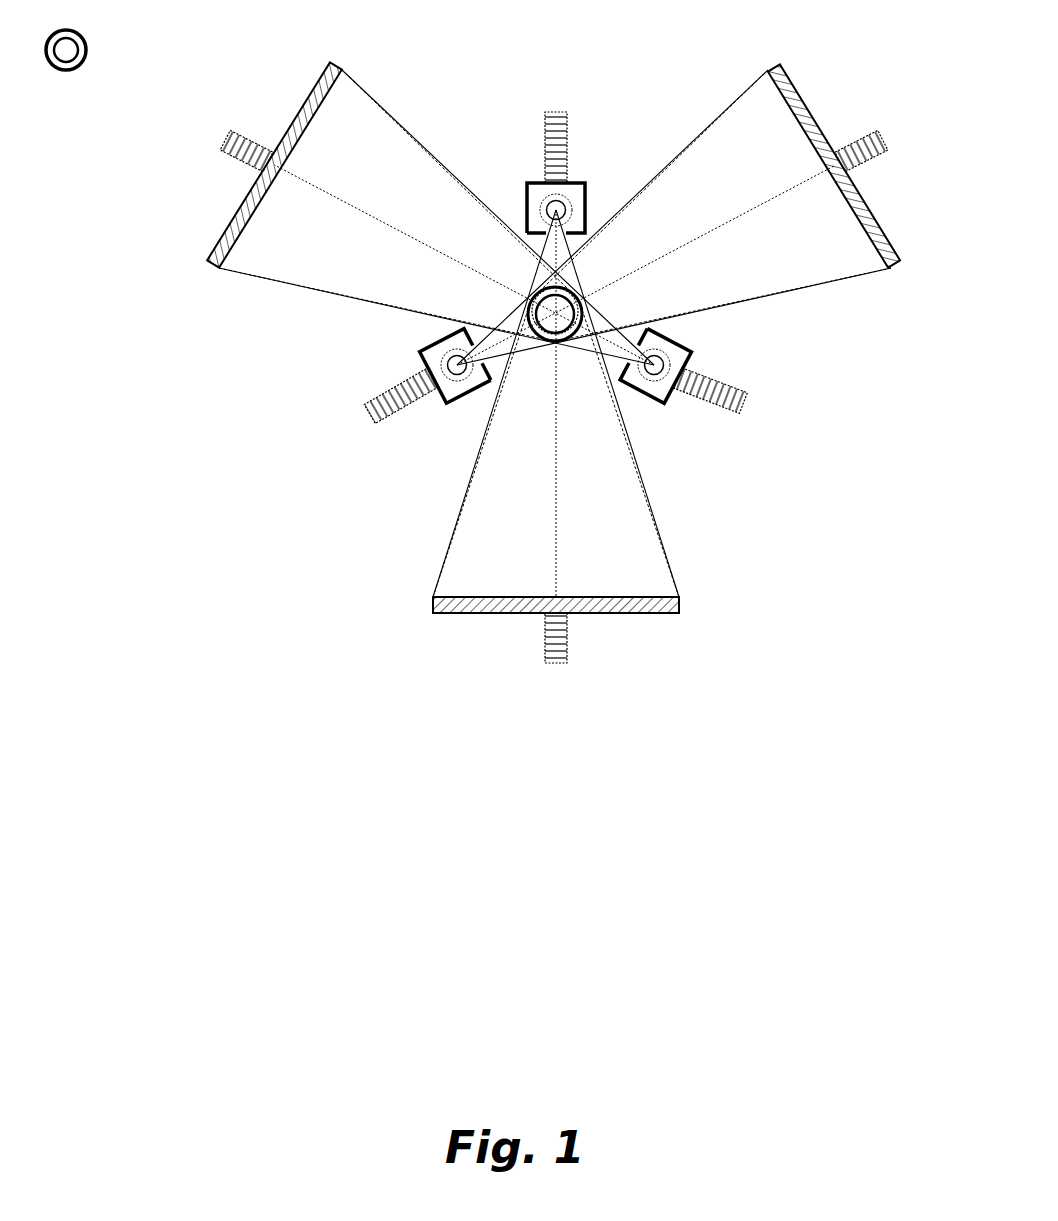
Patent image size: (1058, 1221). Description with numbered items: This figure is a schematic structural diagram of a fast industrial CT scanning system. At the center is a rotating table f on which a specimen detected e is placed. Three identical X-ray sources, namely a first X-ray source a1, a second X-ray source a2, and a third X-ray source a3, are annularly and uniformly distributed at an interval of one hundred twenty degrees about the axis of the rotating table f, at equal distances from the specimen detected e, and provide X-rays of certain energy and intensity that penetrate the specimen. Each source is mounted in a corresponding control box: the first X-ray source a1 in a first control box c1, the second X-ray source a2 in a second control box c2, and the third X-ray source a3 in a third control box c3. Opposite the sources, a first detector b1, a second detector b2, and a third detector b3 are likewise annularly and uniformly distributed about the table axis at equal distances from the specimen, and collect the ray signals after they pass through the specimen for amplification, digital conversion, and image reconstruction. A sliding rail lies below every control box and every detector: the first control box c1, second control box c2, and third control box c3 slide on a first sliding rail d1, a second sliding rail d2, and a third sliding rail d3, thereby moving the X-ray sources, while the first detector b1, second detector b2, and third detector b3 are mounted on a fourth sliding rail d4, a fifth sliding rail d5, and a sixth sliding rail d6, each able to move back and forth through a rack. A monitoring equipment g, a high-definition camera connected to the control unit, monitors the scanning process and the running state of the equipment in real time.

The first X-ray source a1 is at (570, 202).
The second X-ray source a2 is at (678, 348).
The third X-ray source a3 is at (437, 353).
The first detector b1 is at (680, 597).
The second detector b2 is at (313, 97).
The third detector b3 is at (800, 97).
The first control box c1 is at (540, 182).
The second control box c2 is at (642, 397).
The third control box c3 is at (462, 398).
The first sliding rail d1 is at (567, 112).
The second sliding rail d2 is at (742, 397).
The third sliding rail d3 is at (378, 398).
The fourth sliding rail d4 is at (567, 658).
The fifth sliding rail d5 is at (238, 160).
The sixth sliding rail d6 is at (873, 163).
The specimen detected e is at (575, 288).
The rotating table f is at (535, 287).
The monitoring equipment g is at (75, 68).